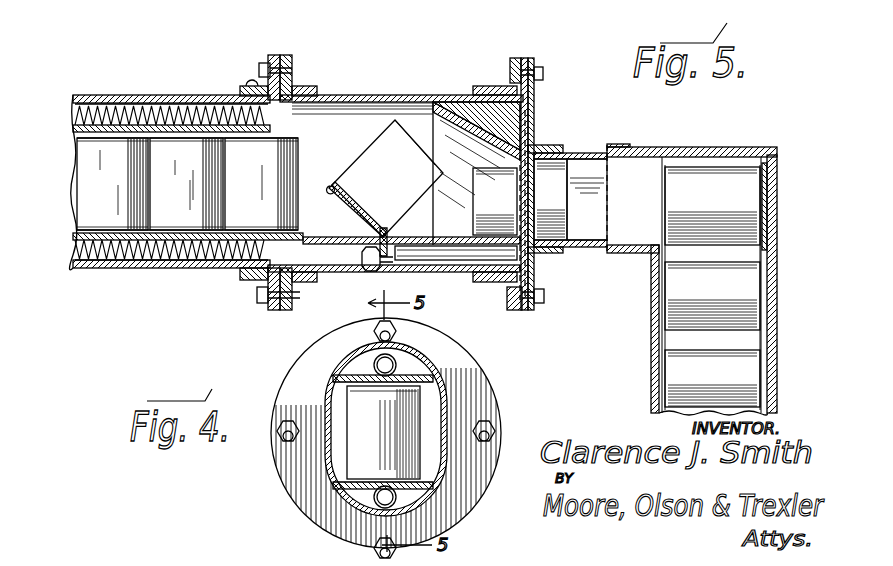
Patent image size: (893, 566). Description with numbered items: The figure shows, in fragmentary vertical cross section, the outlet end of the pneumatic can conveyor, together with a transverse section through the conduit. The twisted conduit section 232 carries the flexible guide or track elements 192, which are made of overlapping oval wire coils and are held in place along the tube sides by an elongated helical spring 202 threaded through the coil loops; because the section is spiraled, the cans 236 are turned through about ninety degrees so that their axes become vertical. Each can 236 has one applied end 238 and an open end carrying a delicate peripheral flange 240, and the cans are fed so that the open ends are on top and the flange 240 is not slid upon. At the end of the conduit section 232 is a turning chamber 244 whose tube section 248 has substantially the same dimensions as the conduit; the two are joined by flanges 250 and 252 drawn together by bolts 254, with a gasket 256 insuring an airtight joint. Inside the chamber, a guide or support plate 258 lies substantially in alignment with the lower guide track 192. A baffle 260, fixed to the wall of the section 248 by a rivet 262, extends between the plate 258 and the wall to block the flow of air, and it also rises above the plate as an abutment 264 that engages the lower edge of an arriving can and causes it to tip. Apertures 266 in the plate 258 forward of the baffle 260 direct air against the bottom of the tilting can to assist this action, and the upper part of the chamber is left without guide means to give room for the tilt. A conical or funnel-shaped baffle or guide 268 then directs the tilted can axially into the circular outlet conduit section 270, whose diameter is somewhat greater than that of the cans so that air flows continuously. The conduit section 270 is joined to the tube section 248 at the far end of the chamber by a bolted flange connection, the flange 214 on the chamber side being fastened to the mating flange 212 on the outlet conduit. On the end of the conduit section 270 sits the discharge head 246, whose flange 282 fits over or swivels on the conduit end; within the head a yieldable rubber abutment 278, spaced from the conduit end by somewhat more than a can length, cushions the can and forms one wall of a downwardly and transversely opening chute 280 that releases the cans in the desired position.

In FIG. 5, the guide or track element 192 is at (108, 110).
In FIG. 4, the guide or track element 192 is at (435, 468).
In FIG. 4, the helical spring 202 is at (396, 372).
In FIG. 5, the flange bolt 212 is at (533, 60).
In FIG. 5, the flange 214 is at (516, 62).
In FIG. 5, the conduit section 232 is at (157, 96).
In FIG. 4, the conduit section 232 is at (441, 373).
In FIG. 5, the can 236 is at (293, 158).
In FIG. 4, the can 236 is at (347, 447).
In FIG. 5, the can end 238 is at (331, 188).
In FIG. 5, the peripheral flange 240 is at (386, 102).
In FIG. 5, the turning chamber 244 is at (426, 85).
In FIG. 5, the discharge nozzle or head 246 is at (721, 136).
In FIG. 5, the tube section 248 is at (325, 93).
In FIG. 5, the flange 250 is at (262, 67).
In FIG. 4, the flange 250 is at (290, 376).
In FIG. 5, the flange 252 is at (288, 57).
In FIG. 5, the bolt 254 is at (257, 294).
In FIG. 5, the gasket 256 is at (280, 58).
In FIG. 5, the guide or support plate 258 is at (450, 272).
In FIG. 5, the baffle 260 is at (386, 272).
In FIG. 5, the rivet 262 is at (372, 273).
In FIG. 5, the abutment 264 is at (385, 230).
In FIG. 5, the apertures 266 is at (293, 309).
In FIG. 5, the conical baffle or guide 268 is at (523, 133).
In FIG. 5, the outlet conduit section 270 is at (579, 152).
In FIG. 5, the abutment 278 is at (783, 182).
In FIG. 5, the chute 280 is at (773, 335).
In FIG. 5, the flange 282 is at (621, 148).